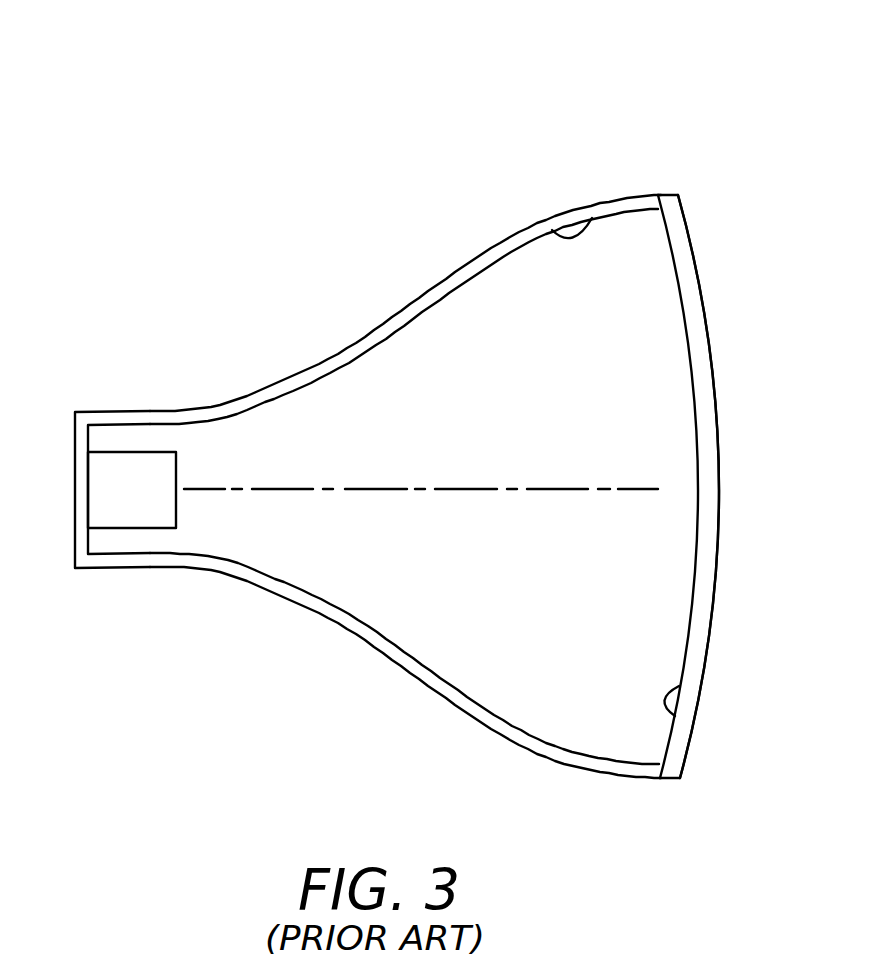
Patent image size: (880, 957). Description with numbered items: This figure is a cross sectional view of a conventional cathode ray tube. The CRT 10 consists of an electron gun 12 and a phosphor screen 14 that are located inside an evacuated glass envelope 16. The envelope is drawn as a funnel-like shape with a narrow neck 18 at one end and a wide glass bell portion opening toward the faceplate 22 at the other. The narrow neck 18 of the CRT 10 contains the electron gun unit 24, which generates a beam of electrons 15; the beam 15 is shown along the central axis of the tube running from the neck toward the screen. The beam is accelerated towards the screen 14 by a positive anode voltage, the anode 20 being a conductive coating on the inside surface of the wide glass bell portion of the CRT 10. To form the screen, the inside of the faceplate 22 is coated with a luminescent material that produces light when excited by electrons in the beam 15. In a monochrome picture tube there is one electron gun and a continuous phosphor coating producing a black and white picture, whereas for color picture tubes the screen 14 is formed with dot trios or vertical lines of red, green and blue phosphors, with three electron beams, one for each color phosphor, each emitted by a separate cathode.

The CRT 10 is at (690, 95).
The electron gun 12 is at (268, 322).
The phosphor screen 14 is at (670, 712).
The beam of electrons 15 is at (545, 487).
The evacuated glass envelope 16 is at (645, 263).
The narrow neck 18 is at (170, 569).
The anode 20 is at (553, 229).
The faceplate 22 is at (748, 496).
The electron gun unit 24 is at (113, 520).